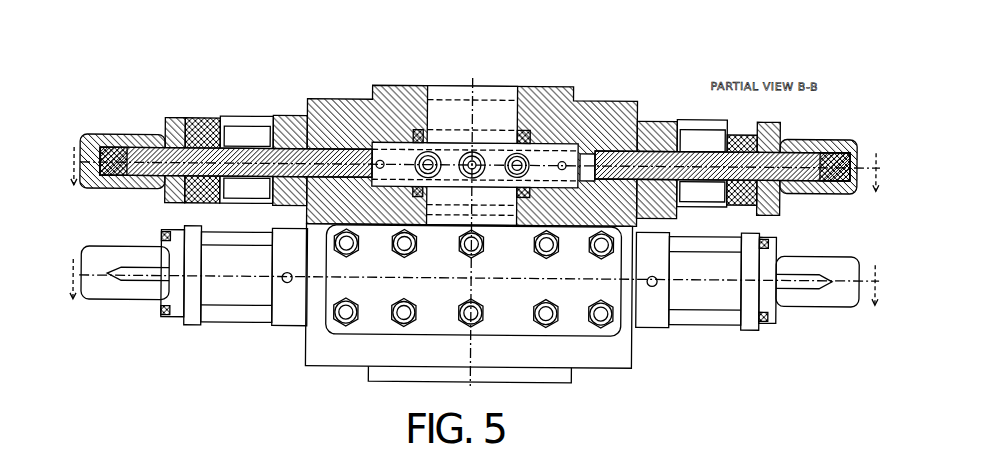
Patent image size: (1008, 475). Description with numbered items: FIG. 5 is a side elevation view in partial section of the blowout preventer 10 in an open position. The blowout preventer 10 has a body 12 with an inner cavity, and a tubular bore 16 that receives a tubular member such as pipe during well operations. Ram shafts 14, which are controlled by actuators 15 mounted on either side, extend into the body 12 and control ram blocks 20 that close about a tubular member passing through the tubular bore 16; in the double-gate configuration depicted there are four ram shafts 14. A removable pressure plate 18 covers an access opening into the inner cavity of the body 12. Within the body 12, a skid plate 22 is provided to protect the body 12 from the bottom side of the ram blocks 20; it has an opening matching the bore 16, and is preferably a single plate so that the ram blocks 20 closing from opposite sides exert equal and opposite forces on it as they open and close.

The blowout preventer 10 is at (193, 79).
The body 12 is at (632, 345).
The ram shafts 14 is at (243, 152).
The actuators 15 is at (697, 153).
The tubular bore 16 is at (483, 85).
The removable pressure plate 18 is at (333, 295).
The ram blocks 20 is at (393, 158).
The skid plate 22 is at (490, 189).